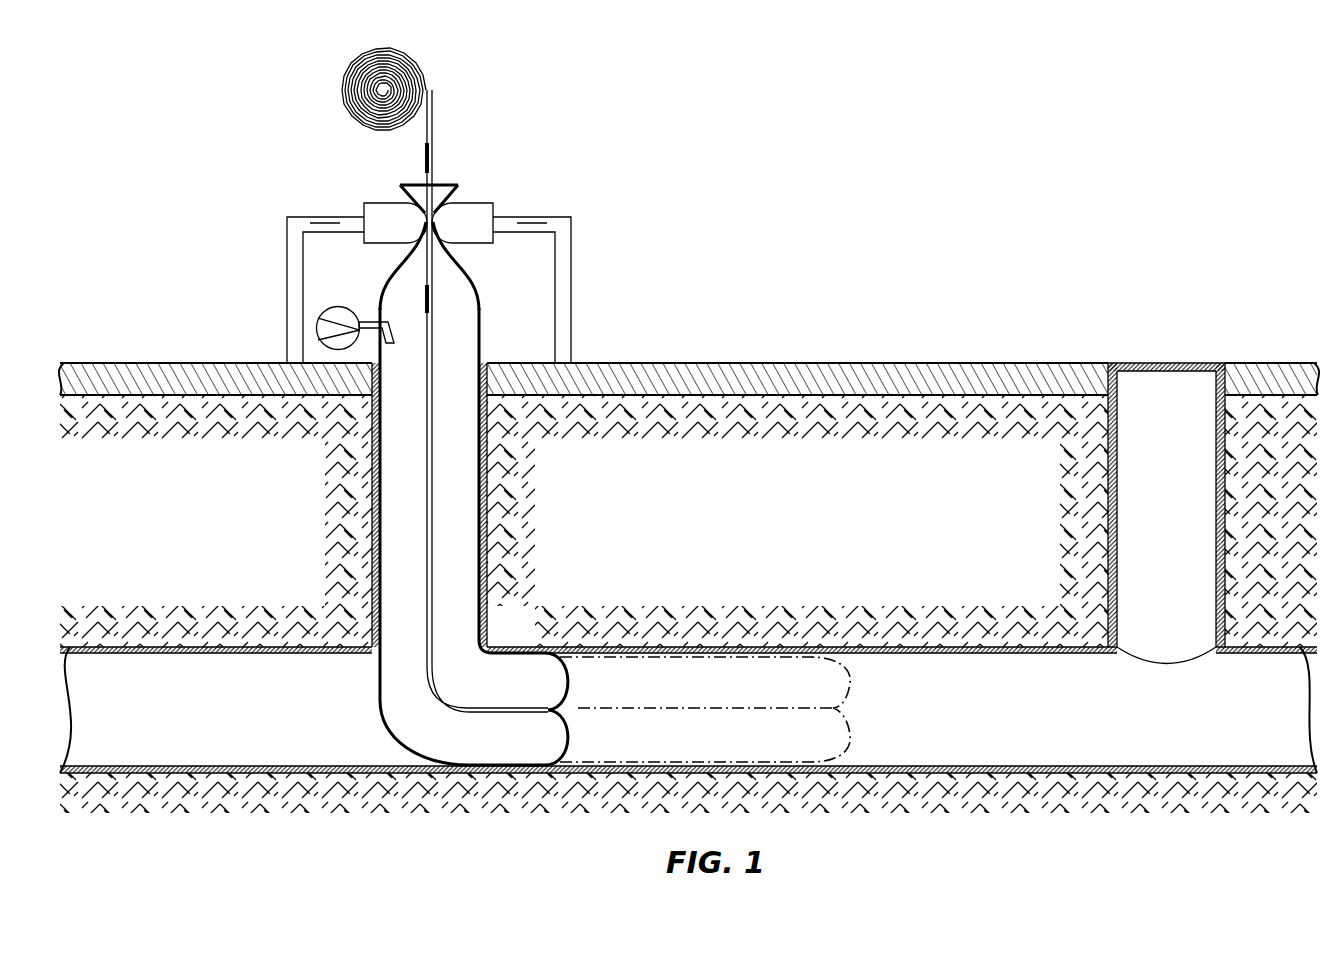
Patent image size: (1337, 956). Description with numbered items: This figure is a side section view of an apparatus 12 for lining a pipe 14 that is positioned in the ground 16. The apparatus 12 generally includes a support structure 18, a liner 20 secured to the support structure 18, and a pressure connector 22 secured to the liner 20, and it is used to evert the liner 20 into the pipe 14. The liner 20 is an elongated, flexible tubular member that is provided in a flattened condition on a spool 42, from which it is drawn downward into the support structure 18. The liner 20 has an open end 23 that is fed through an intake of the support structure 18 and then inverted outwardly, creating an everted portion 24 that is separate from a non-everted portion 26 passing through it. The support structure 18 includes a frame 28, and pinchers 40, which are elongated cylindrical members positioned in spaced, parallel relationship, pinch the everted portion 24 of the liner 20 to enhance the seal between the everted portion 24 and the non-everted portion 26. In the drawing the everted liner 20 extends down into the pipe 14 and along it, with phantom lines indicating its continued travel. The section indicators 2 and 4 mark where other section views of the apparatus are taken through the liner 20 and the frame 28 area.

The apparatus 12 is at (657, 122).
The pipe 14 is at (921, 645).
The ground 16 is at (795, 528).
The support structure 18 is at (584, 253).
The liner 20 is at (615, 414).
The pressure connector 22 is at (371, 322).
The open end 23 is at (411, 190).
The everted portion 24 is at (463, 258).
The non-everted portion 26 is at (426, 408).
The frame 28 is at (571, 300).
The pinchers 40 is at (478, 203).
The spool 42 is at (381, 89).
The section line 2 is at (436, 158).
The section line 4 is at (325, 221).